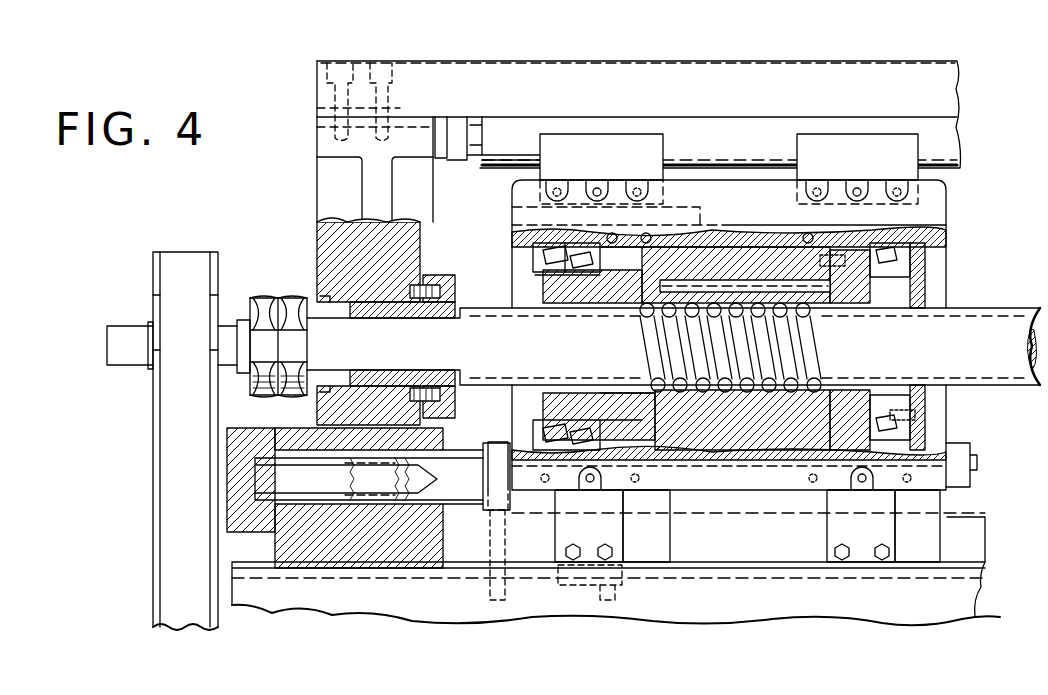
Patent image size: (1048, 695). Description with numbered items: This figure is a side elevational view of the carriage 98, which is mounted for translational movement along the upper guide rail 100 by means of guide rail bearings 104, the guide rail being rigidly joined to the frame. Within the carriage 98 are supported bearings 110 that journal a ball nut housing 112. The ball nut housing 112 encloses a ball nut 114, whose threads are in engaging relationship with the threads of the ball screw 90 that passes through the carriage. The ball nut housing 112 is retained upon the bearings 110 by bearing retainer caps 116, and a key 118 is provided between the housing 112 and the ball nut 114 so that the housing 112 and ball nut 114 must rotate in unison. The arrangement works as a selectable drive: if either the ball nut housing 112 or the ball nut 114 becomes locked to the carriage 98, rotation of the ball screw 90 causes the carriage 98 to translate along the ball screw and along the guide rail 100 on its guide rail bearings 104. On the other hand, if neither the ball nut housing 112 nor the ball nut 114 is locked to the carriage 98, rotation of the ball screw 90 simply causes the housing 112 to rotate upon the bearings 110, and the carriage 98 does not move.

The ball screw 90 is at (504, 345).
The carriage 98 is at (946, 210).
The upper guide rail 100 is at (700, 130).
The guide rail bearings 104 is at (597, 153).
The bearings 110 is at (946, 252).
The ball nut housing 112 is at (946, 397).
The ball nut 114 is at (815, 402).
The bearing retainer caps 116 is at (533, 258).
The key 118 is at (713, 285).